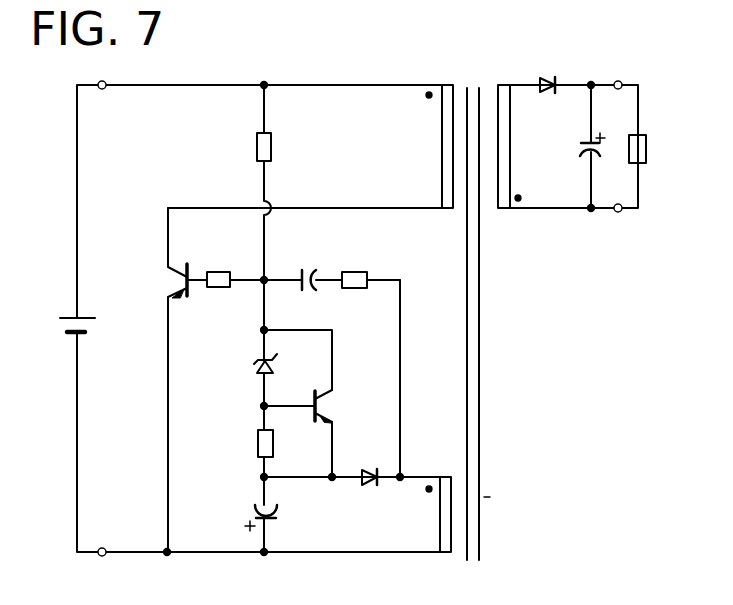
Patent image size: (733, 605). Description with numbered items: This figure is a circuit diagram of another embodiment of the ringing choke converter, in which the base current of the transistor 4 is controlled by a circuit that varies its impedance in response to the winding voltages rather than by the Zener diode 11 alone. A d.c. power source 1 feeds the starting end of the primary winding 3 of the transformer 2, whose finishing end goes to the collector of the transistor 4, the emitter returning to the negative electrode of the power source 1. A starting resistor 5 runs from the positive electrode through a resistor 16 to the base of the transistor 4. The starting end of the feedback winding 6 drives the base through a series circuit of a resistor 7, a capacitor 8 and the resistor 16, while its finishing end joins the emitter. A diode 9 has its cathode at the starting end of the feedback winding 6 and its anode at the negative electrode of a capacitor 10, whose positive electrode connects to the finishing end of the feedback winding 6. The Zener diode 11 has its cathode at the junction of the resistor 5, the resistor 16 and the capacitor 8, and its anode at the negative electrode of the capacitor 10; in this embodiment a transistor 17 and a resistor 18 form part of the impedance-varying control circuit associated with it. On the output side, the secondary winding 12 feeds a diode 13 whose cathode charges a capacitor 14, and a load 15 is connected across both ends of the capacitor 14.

The d.c. power source 1 is at (68, 318).
The transformer 2 is at (469, 88).
The primary winding 3 is at (443, 84).
The transistor 4 is at (178, 283).
The starting resistor 5 is at (271, 145).
The feedback winding 6 is at (443, 554).
The resistor 7 is at (357, 270).
The capacitor 8 is at (309, 268).
The diode 9 is at (369, 488).
The capacitor 10 is at (278, 510).
The Zener diode 11 is at (256, 370).
The secondary winding 12 is at (500, 209).
The diode 13 is at (548, 79).
The capacitor 14 is at (581, 144).
The load 15 is at (647, 146).
The resistor 16 is at (219, 288).
The control transistor 17 is at (323, 402).
The resistor 18 is at (257, 447).